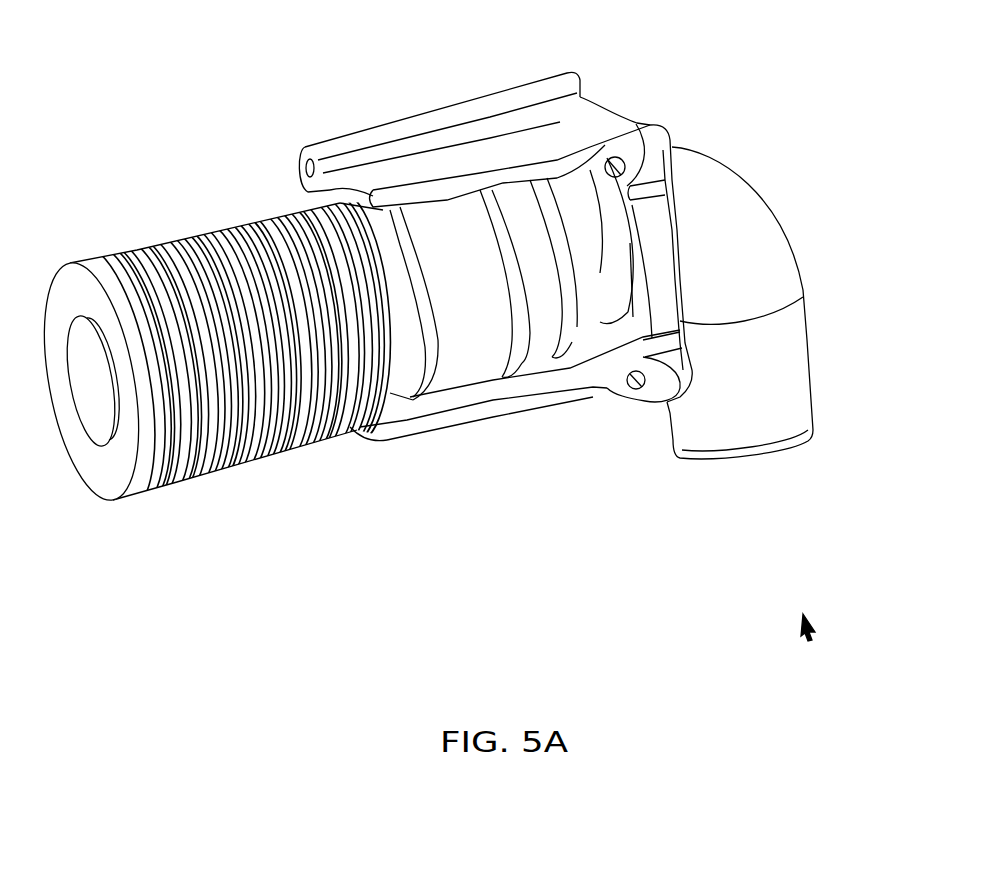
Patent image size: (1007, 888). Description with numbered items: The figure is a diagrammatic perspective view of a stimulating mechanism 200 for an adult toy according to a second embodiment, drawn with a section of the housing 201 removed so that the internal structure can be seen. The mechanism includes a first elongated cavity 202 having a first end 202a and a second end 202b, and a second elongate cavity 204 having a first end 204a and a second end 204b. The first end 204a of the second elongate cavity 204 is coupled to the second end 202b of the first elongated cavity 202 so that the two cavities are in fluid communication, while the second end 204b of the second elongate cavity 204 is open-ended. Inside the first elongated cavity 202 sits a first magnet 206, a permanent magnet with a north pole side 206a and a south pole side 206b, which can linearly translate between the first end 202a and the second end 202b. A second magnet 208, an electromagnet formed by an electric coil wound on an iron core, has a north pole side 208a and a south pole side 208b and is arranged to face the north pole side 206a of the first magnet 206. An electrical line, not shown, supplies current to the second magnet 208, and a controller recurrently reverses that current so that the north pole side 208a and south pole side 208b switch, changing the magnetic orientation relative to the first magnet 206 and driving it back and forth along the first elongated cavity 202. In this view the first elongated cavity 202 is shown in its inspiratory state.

The stimulating mechanism 200 is at (814, 636).
The housing 201 is at (613, 113).
The first elongated cavity 202 is at (543, 313).
The first end of first elongated cavity 202a is at (498, 213).
The second end of first elongated cavity 202b is at (618, 288).
The second elongate cavity 204 is at (800, 263).
The first end of second elongate cavity 204a is at (675, 147).
The second end of second elongate cavity 204b is at (773, 458).
The first magnet 206 is at (453, 247).
The north pole side of first magnet 206a is at (408, 360).
The south pole side of first magnet 206b is at (493, 343).
The second magnet 208 is at (197, 233).
The north pole side of second magnet 208a is at (92, 468).
The south pole side of second magnet 208b is at (350, 427).